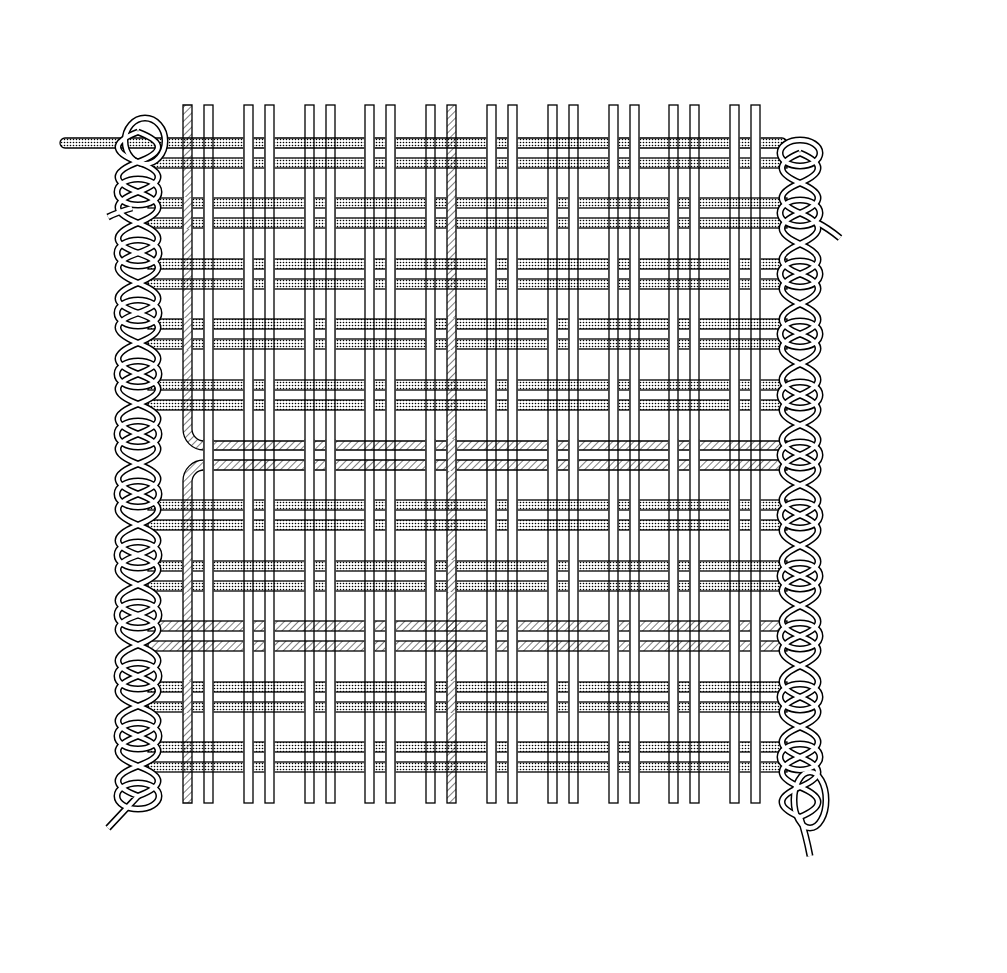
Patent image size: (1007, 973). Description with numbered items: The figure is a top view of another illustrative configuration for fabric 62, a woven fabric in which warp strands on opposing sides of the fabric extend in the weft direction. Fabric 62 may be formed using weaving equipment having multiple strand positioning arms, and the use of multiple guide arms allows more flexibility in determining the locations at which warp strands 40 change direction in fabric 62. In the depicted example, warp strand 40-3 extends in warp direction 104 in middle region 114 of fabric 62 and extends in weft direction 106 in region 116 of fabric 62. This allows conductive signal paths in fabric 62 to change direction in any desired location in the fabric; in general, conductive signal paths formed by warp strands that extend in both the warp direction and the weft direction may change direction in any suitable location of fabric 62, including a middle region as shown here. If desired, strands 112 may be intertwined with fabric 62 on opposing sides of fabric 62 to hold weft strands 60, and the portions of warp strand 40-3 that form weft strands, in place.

The fabric 62 is at (168, 56).
The middle region 114 is at (466, 93).
The weft strands 60 is at (582, 134).
The warp strands 40 is at (738, 104).
The strands 112 is at (821, 158).
The warp direction 104 is at (78, 340).
The region 116 is at (837, 606).
The warp strand 40-3 is at (457, 793).
The weft direction 106 is at (321, 852).